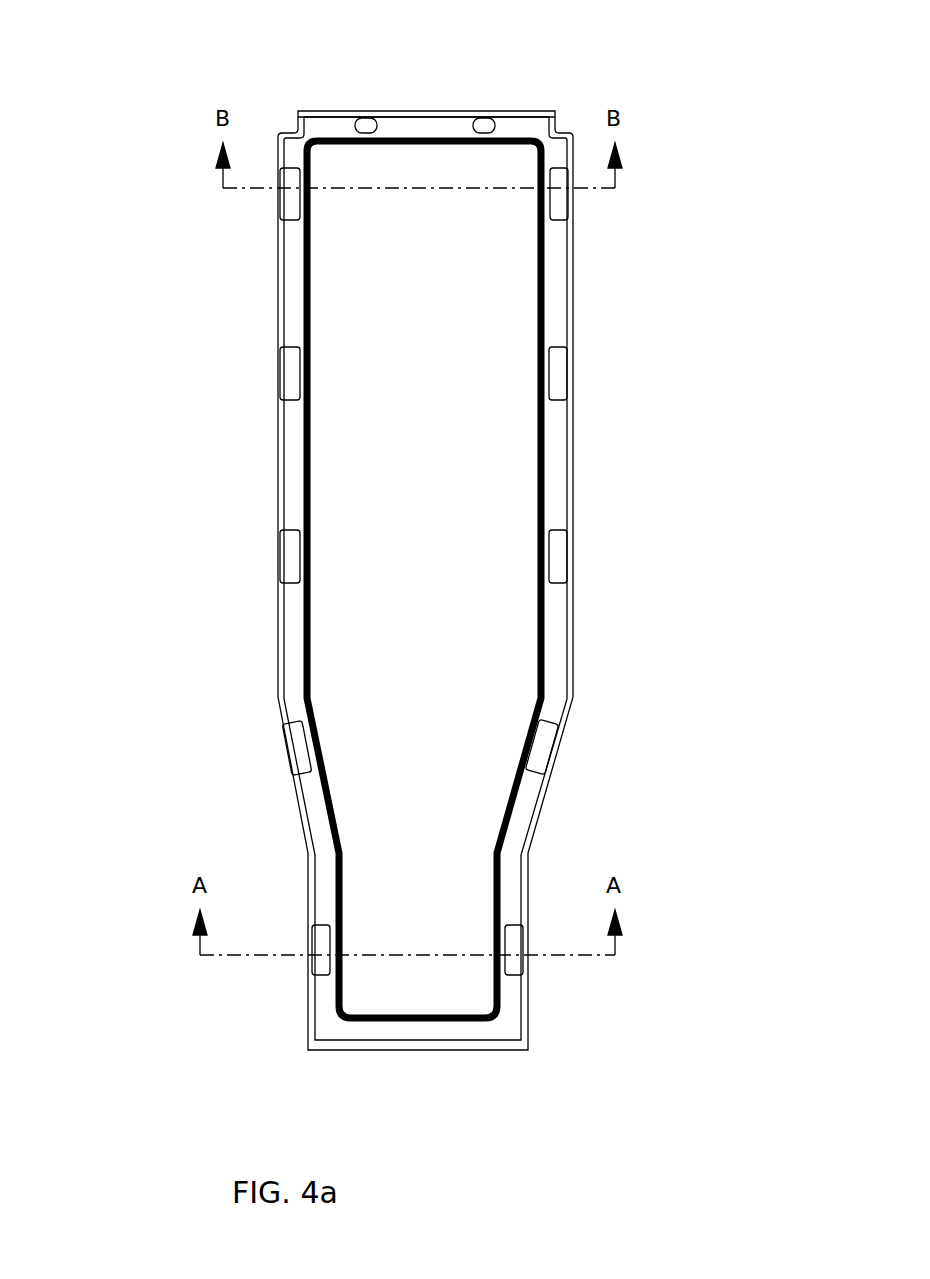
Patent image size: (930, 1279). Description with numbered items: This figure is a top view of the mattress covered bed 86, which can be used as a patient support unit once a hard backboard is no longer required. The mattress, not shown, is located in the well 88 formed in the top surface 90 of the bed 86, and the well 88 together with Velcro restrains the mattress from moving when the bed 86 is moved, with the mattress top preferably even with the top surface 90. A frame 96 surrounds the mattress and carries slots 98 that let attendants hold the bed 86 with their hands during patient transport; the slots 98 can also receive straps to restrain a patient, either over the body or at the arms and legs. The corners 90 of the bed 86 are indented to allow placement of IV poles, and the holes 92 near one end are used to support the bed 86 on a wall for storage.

The mattress covered bed 86 is at (240, 670).
The well 88 is at (462, 634).
The top surface 90 is at (287, 120).
The holes 92 is at (480, 130).
The frame 96 is at (553, 483).
The slots 98 is at (555, 380).